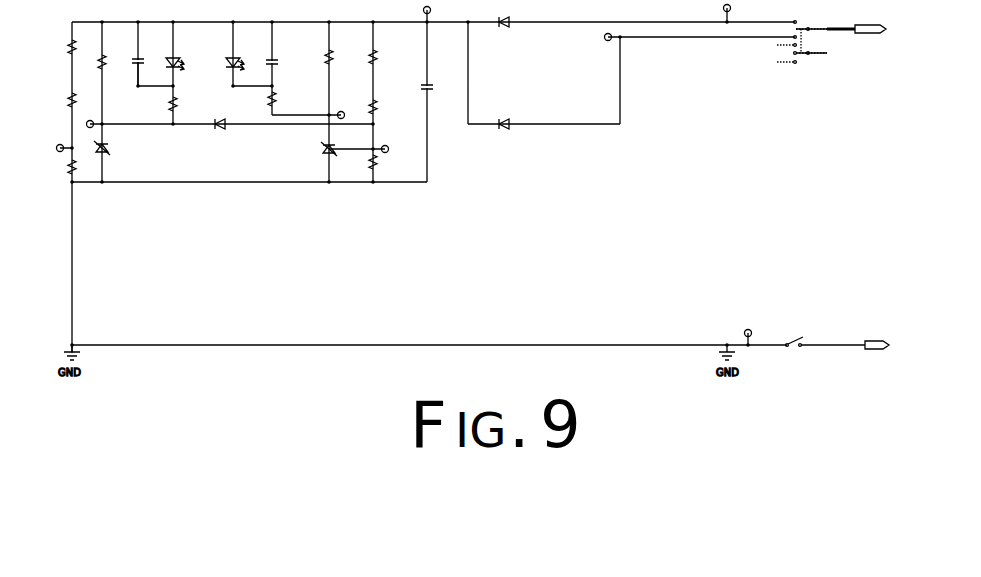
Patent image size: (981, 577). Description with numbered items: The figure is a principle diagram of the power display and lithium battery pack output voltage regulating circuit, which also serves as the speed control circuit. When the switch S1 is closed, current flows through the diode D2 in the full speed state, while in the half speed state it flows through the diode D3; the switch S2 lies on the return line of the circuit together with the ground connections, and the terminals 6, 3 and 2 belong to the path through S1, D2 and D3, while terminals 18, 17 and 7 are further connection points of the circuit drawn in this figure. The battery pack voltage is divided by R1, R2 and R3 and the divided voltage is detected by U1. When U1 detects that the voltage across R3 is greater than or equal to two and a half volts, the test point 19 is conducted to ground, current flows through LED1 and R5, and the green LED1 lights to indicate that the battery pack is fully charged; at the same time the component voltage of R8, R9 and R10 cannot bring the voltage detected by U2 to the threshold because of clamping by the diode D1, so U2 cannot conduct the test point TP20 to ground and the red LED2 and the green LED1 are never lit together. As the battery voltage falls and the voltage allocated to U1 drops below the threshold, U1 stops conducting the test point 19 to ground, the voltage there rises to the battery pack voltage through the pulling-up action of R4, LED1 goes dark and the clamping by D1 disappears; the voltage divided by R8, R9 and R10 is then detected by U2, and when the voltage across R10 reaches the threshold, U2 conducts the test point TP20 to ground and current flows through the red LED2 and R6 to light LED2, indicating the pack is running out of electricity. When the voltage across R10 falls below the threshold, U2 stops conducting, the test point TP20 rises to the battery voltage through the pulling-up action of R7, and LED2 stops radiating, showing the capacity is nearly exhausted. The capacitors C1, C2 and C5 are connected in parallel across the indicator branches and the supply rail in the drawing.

The terminal 18 is at (56, 141).
The test point 19 is at (88, 128).
The terminal 6 is at (421, 9).
The terminal 3 is at (722, 9).
The terminal 2 is at (604, 42).
The terminal 17 is at (387, 142).
The terminal 7 is at (749, 327).
The test point TP20 is at (346, 109).
The resistor R1 is at (79, 47).
The resistor R2 is at (79, 100).
The resistor R3 is at (79, 167).
The pull-up resistor R4 is at (109, 62).
The resistor R5 is at (180, 104).
The resistor R6 is at (279, 100).
The pull-up resistor R7 is at (336, 59).
The resistor R8 is at (380, 58).
The resistor R9 is at (380, 108).
The resistor R10 is at (384, 162).
The capacitor C1 is at (145, 71).
The capacitor C2 is at (281, 62).
The capacitor C5 is at (435, 87).
The green LED LED1 is at (187, 58).
The red LED LED2 is at (245, 58).
The diode D1 is at (218, 116).
The diode D2 is at (501, 14).
The diode D3 is at (501, 116).
The voltage detector U1 is at (110, 144).
The voltage detector U2 is at (334, 145).
The switch S1 is at (831, 44).
The SPST switch S2 is at (830, 342).